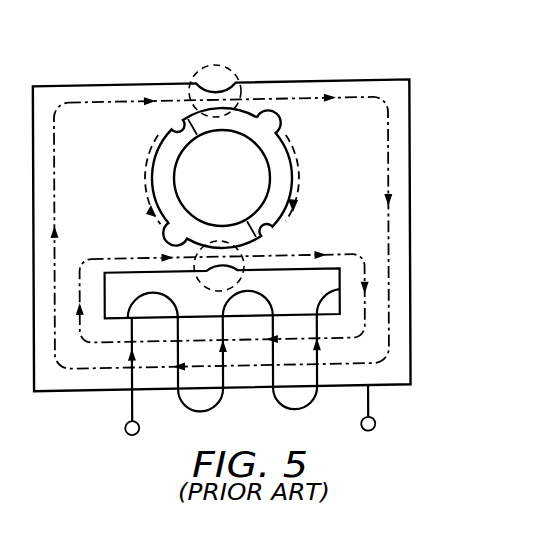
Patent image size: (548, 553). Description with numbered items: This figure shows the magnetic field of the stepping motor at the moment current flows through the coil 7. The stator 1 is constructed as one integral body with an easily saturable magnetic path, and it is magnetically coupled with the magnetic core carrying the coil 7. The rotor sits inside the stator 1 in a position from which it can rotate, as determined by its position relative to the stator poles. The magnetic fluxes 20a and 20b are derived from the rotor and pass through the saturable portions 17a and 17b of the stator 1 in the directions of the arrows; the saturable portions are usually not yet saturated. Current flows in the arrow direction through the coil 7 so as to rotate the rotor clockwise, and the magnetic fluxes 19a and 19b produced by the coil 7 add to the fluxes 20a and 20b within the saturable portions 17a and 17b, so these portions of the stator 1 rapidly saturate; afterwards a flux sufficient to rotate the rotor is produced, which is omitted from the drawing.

The stator 1 is at (403, 229).
The coil 7 is at (127, 408).
The saturable portion 17a is at (236, 73).
The saturable portion 17b is at (250, 282).
The magnetic flux 19a is at (362, 99).
The magnetic flux 19b is at (81, 268).
The magnetic flux 20a is at (297, 140).
The magnetic flux 20b is at (140, 148).